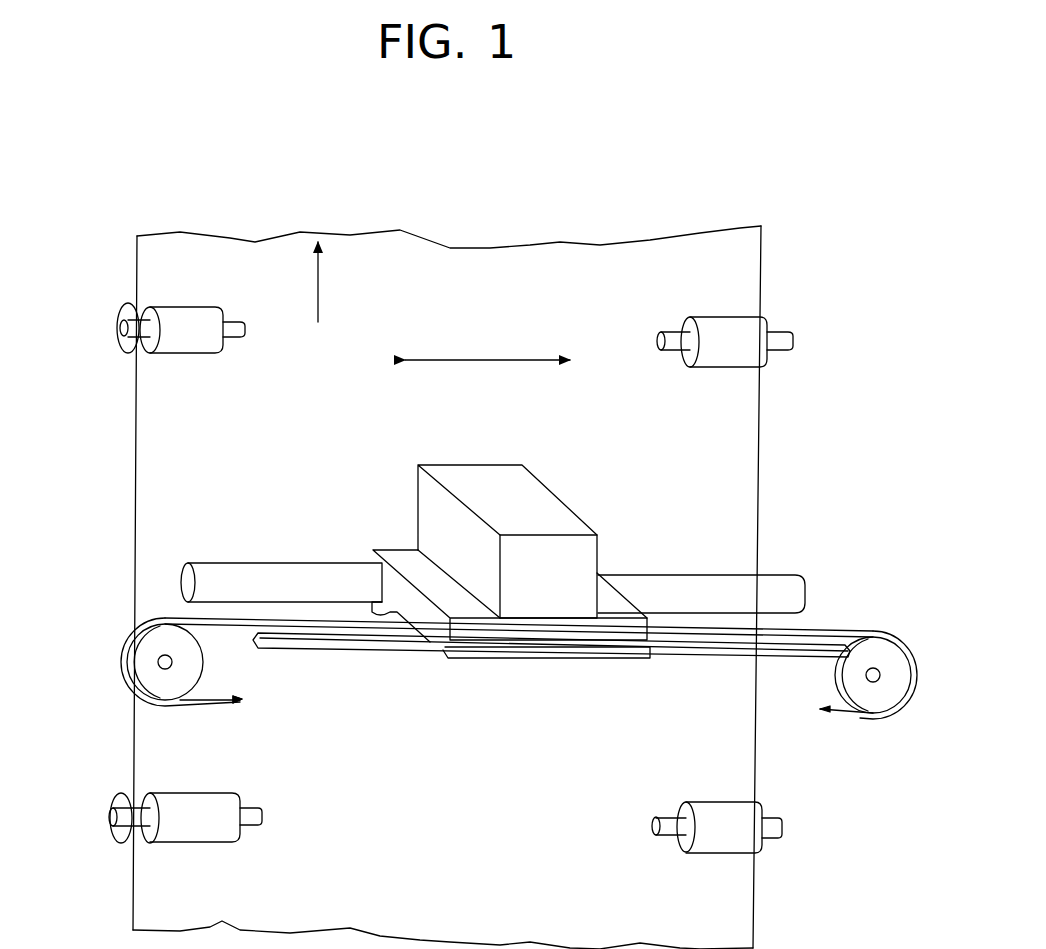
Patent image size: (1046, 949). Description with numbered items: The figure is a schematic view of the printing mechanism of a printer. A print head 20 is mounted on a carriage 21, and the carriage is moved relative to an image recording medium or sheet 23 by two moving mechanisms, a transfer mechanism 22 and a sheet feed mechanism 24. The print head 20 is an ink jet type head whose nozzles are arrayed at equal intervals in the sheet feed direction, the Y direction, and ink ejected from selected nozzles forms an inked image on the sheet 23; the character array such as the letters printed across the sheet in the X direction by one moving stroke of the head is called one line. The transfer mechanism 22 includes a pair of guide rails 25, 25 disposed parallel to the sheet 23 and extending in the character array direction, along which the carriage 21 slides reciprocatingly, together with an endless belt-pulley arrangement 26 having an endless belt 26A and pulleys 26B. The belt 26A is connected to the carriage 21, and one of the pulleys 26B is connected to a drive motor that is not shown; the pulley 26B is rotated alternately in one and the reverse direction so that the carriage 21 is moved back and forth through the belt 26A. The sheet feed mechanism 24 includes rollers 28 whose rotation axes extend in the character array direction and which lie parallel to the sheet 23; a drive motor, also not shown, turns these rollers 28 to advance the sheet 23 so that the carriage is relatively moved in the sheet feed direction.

The print head 20 is at (470, 472).
The carriage 21 is at (618, 604).
The transfer mechanism 22 is at (838, 610).
The sheet 23 is at (534, 262).
The sheet feed mechanism 24 is at (770, 800).
The guide rails 25 is at (778, 584).
The endless belt-pulley arrangement 26 is at (222, 628).
The endless belt 26A is at (232, 702).
The pulleys 26B is at (135, 655).
The rollers 28 is at (190, 315).